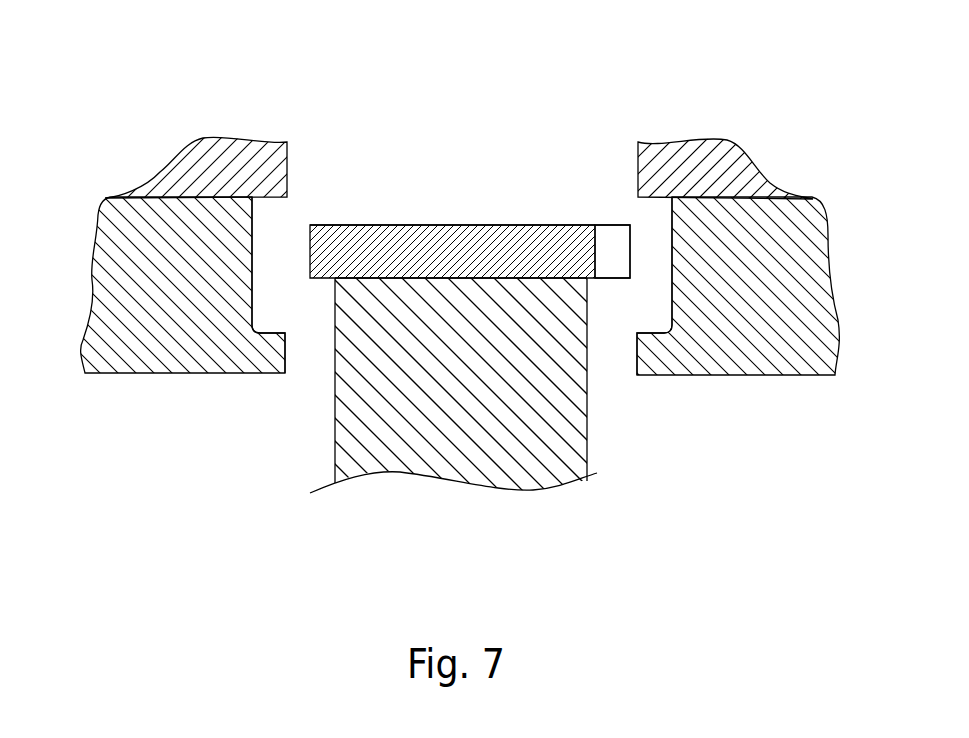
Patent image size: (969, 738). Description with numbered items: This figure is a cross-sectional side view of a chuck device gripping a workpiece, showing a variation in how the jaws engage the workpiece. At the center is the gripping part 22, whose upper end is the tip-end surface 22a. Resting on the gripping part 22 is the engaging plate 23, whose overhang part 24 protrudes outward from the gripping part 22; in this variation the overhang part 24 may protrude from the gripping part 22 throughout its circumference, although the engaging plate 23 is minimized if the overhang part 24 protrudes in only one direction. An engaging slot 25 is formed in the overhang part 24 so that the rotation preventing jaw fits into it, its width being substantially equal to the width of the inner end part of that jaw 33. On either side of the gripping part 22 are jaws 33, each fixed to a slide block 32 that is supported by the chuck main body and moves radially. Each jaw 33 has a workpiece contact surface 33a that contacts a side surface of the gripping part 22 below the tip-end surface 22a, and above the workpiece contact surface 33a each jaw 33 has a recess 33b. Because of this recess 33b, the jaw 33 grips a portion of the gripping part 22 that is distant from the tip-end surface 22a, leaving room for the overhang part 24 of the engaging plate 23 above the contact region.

The gripping part 22 is at (468, 435).
The tip-end surface 22a is at (537, 277).
The engaging plate 23 is at (470, 234).
The overhang part 24 is at (327, 224).
The engaging slot 25 is at (612, 253).
The slide block 32 is at (228, 162).
The jaw 33 is at (190, 347).
The workpiece contact surface 33a is at (287, 357).
The recess 33b is at (252, 245).